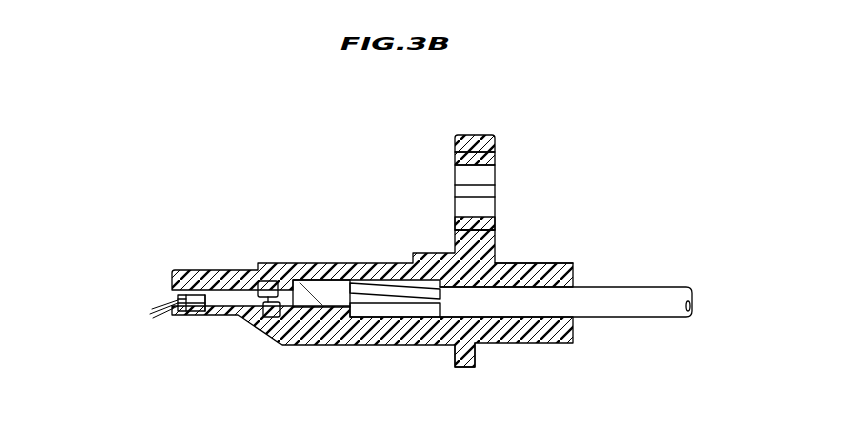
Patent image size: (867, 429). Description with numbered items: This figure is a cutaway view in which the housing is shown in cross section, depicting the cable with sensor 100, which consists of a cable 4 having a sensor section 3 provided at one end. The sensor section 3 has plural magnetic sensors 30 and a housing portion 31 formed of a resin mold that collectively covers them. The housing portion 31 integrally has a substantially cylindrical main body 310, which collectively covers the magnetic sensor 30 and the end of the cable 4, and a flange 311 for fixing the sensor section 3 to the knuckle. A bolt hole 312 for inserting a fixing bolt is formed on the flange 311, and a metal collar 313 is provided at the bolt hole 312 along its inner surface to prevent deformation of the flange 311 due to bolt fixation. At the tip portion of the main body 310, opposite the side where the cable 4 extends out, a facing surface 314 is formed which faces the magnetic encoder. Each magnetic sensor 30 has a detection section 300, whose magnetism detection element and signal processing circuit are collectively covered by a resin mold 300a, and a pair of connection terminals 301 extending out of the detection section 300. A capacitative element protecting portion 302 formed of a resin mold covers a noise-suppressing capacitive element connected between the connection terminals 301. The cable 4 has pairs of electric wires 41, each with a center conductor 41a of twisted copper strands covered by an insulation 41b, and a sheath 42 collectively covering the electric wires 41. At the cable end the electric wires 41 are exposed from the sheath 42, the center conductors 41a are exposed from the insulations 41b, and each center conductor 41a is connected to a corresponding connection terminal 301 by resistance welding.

The cable with sensor 100 is at (397, 261).
The sensor section 3 is at (204, 274).
The magnetic sensor 30 is at (163, 311).
The detection section 300 is at (182, 293).
The resin mold 300a is at (185, 309).
The connection terminal 301 is at (266, 283).
The capacitative element protecting portion 302 is at (272, 318).
The housing portion 31 is at (386, 271).
The main body 310 is at (526, 343).
The flange 311 is at (466, 360).
The bolt hole 312 is at (487, 180).
The metal collar 313 is at (496, 153).
The facing surface 314 is at (207, 312).
The cable 4 is at (566, 306).
The electric wire 41 is at (366, 309).
The center conductor 41a is at (332, 282).
The insulation 41b is at (392, 293).
The sheath 42 is at (628, 317).